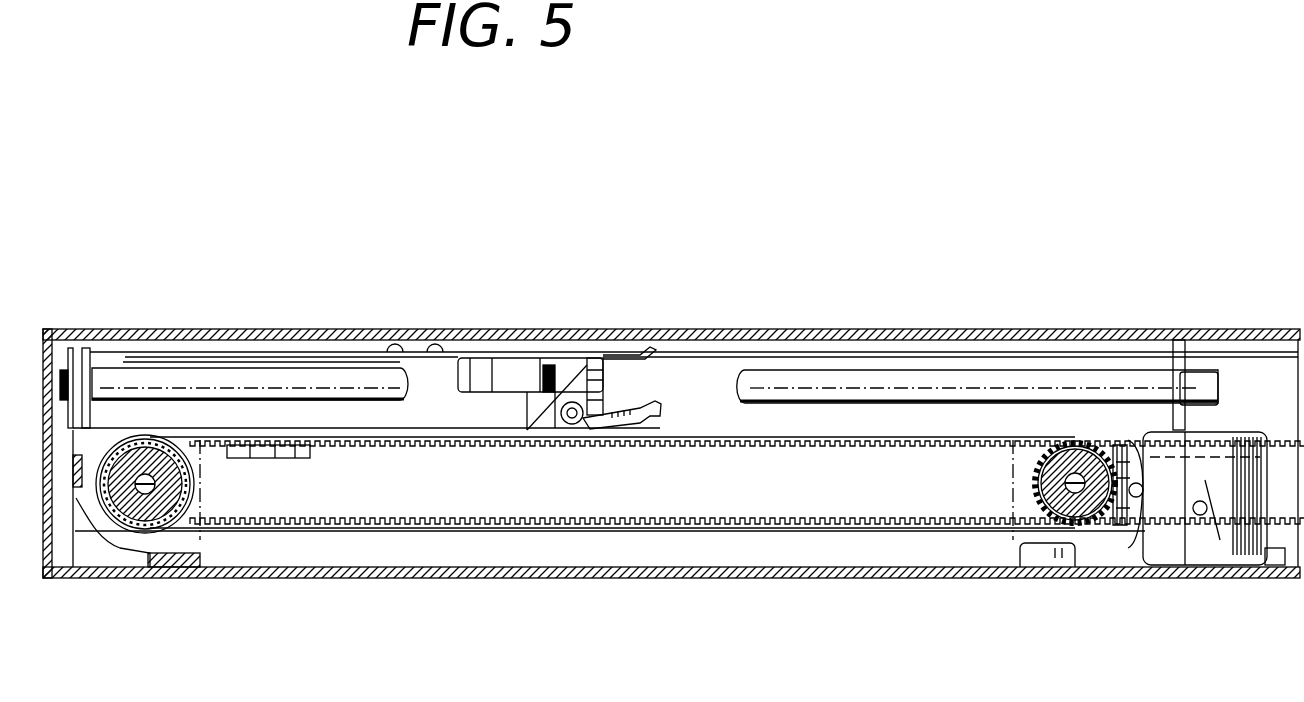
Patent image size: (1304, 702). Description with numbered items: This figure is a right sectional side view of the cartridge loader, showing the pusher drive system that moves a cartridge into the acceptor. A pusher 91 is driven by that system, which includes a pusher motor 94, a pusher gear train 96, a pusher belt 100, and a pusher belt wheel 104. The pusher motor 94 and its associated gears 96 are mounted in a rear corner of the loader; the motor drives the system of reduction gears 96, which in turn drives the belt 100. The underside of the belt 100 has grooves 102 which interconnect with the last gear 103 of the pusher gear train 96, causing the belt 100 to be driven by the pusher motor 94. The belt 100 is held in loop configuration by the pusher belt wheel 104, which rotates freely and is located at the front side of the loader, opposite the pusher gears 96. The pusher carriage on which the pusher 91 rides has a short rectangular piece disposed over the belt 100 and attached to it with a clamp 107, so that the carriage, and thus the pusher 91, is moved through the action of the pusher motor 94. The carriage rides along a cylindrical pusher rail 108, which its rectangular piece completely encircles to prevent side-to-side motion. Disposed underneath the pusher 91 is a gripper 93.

The pusher 91 is at (628, 348).
The cylindrical pusher rail 108 is at (937, 372).
The gripper 93 is at (655, 429).
The grooves 102 is at (463, 440).
The clamp 107 is at (283, 448).
The pusher belt wheel 104 is at (170, 525).
The pusher belt 100 is at (750, 531).
The last gear 103 is at (1043, 522).
The pusher gear train 96 is at (1110, 525).
The pusher motor 94 is at (1220, 565).